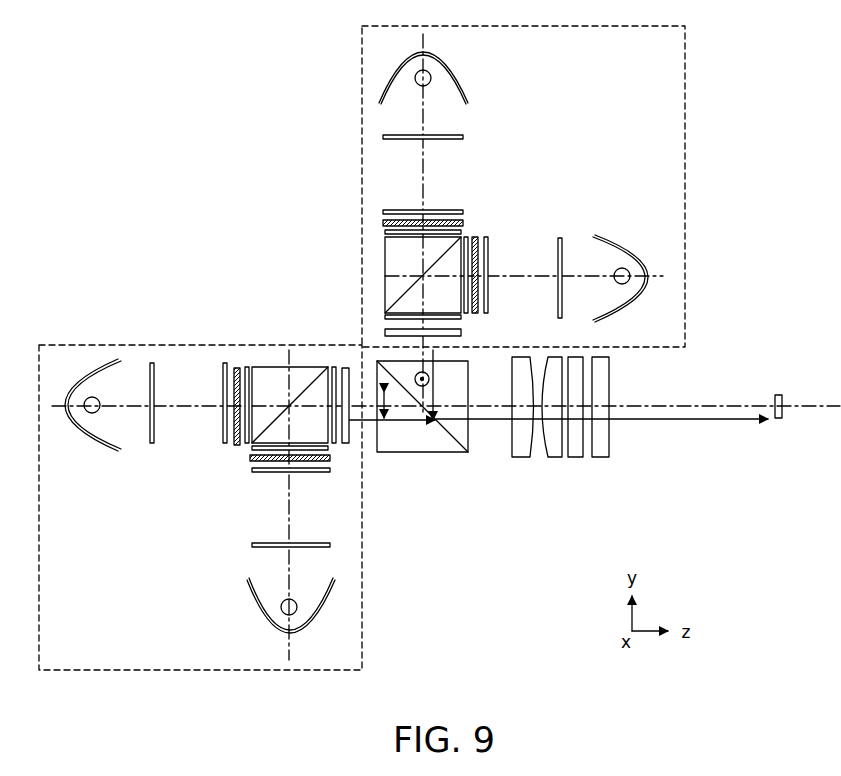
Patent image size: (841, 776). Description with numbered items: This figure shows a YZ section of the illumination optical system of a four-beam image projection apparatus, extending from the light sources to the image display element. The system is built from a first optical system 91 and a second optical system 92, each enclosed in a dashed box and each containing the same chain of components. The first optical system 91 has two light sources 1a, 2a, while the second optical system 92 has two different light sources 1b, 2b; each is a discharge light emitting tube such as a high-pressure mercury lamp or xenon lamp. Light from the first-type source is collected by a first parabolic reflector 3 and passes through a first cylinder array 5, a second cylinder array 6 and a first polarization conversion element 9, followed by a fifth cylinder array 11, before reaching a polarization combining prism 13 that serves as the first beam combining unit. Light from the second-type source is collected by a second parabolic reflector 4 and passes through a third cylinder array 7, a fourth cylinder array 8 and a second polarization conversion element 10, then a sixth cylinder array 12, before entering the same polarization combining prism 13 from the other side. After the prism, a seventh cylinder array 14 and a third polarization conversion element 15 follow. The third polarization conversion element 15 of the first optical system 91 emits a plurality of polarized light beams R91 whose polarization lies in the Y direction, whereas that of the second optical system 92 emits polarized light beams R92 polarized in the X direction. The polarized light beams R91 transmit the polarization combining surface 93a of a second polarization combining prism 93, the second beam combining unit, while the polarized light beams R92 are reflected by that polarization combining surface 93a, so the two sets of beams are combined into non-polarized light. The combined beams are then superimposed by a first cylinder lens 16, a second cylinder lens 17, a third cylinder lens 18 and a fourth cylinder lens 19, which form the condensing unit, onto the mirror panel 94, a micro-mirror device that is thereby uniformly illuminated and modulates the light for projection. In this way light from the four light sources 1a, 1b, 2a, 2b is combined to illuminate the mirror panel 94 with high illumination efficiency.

The light source 1a is at (92, 413).
The light source 1b is at (415, 78).
The light source 2a is at (292, 612).
The light source 2b is at (630, 272).
The first parabolic reflector 3 is at (85, 375).
The second parabolic reflector 4 is at (330, 605).
The first cylinder array 5 is at (152, 362).
The second cylinder array 6 is at (225, 362).
The third cylinder array 7 is at (333, 547).
The fourth cylinder array 8 is at (332, 472).
The first polarization conversion element 9 is at (238, 368).
The second polarization conversion element 10 is at (332, 460).
The fifth cylinder array 11 is at (250, 367).
The sixth cylinder array 12 is at (252, 449).
The polarization combining prism 13 is at (290, 370).
The seventh cylinder array 14 is at (334, 367).
The third polarization conversion element 15 is at (346, 367).
The first cylinder lens 16 is at (522, 457).
The second cylinder lens 17 is at (556, 457).
The third cylinder lens 18 is at (578, 457).
The fourth cylinder lens 19 is at (604, 457).
The first optical system 91 is at (207, 345).
The second optical system 92 is at (362, 170).
The second polarization combining prism 93 is at (436, 452).
The polarization combining surface 93a is at (460, 452).
The mirror panel 94 is at (779, 419).
The polarized light beams R91 is at (386, 425).
The polarized light beams R92 is at (430, 378).